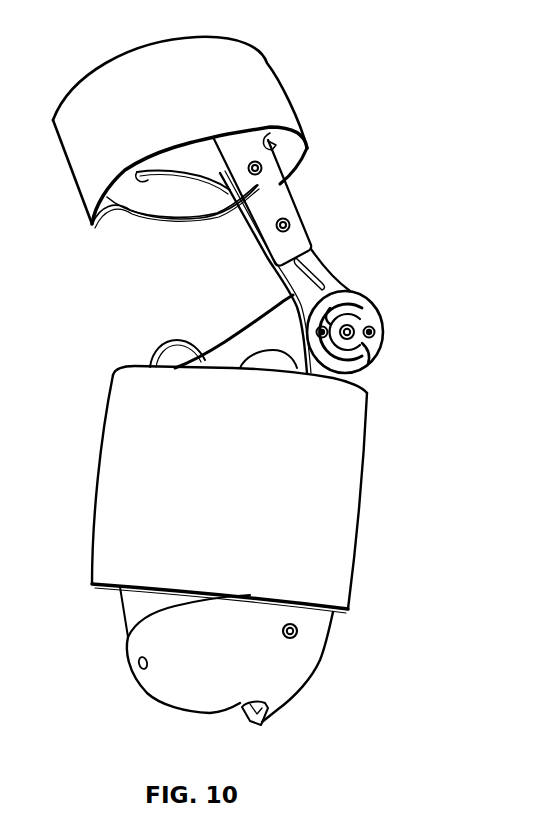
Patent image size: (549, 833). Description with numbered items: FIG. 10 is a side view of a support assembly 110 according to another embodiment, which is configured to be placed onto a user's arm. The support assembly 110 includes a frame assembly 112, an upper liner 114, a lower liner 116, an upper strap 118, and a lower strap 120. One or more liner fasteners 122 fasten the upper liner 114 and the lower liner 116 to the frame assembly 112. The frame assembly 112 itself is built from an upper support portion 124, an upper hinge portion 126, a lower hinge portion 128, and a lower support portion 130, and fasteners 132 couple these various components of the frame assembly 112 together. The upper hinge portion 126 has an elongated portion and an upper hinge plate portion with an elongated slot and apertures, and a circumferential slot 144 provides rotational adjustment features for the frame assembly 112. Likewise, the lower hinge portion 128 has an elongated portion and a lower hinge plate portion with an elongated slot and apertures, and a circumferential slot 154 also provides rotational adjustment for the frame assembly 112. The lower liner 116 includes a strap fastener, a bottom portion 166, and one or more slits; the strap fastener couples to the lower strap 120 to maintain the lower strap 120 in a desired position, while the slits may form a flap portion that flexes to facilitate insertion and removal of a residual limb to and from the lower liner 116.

The support assembly 110 is at (382, 199).
The frame assembly 112 is at (397, 318).
The upper liner 114 is at (187, 197).
The lower liner 116 is at (140, 603).
The upper strap 118 is at (270, 93).
The lower strap 120 is at (340, 455).
The liner fastener 122 is at (298, 635).
The upper support portion 124 is at (278, 197).
The upper hinge portion 126 is at (320, 270).
The lower hinge portion 128 is at (358, 380).
The lower support portion 130 is at (317, 617).
The fasteners 132 is at (288, 224).
The circumferential slot 144 is at (375, 348).
The circumferential slot 154 is at (348, 302).
The bottom portion 166 is at (242, 705).